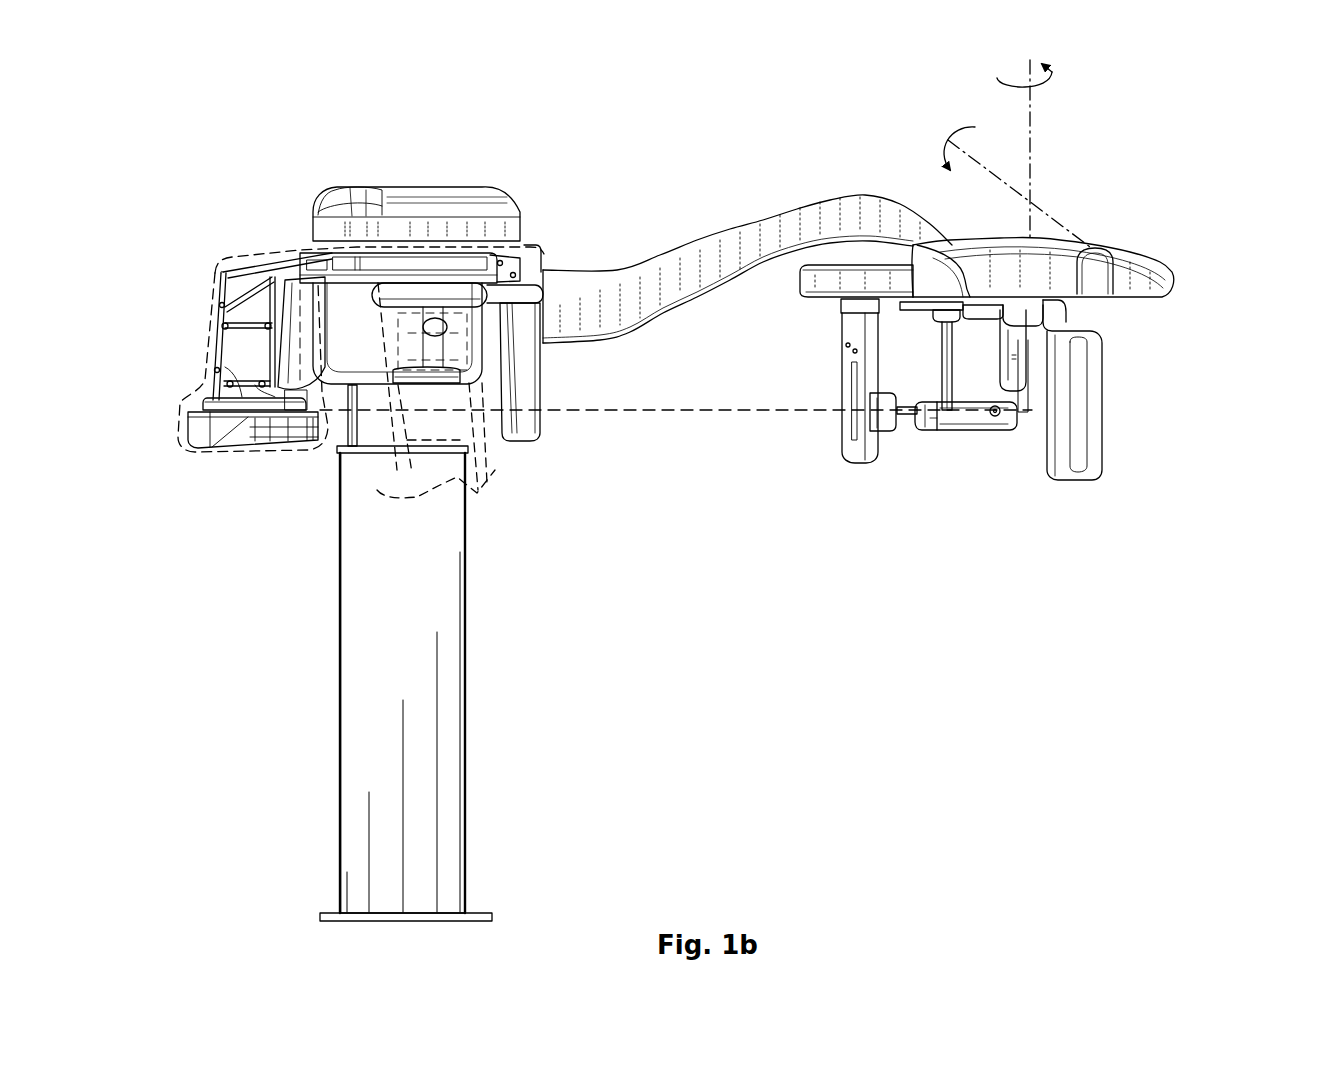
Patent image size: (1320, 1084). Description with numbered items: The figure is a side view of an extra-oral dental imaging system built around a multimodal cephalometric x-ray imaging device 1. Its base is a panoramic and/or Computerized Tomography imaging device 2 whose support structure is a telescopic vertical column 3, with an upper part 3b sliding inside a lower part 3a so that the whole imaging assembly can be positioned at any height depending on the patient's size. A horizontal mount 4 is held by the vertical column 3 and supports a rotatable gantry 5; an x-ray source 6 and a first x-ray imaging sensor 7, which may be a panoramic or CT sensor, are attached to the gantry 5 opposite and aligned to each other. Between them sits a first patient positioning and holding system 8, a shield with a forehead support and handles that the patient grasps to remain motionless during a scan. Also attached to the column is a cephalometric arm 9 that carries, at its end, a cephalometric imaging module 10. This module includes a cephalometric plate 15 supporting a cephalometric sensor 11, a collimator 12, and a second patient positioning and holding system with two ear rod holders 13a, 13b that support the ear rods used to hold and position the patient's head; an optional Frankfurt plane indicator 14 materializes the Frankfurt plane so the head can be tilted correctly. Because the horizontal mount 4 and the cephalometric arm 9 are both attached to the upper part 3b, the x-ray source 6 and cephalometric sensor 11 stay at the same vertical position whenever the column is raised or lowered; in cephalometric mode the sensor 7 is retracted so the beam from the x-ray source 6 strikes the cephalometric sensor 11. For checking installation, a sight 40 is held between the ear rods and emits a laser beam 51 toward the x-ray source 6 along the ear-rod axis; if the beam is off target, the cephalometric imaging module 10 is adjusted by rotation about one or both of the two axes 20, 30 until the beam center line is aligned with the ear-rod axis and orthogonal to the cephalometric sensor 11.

The multimodal cephalometric x-ray imaging device 1 is at (330, 138).
The panoramic and/or Computerized Tomography imaging device 2 is at (250, 235).
The telescopic vertical column 3 is at (362, 653).
The lower part 3a is at (360, 730).
The upper part 3b is at (350, 432).
The horizontal mount 4 is at (406, 228).
The rotatable gantry 5 is at (308, 253).
The x-ray source 6 is at (205, 440).
The first x-ray imaging sensor 7 is at (535, 400).
The first patient positioning and holding system 8 is at (468, 492).
The cephalometric arm 9 is at (722, 258).
The cephalometric imaging module 10 is at (1153, 205).
The cephalometric sensor 11 is at (1085, 385).
The collimator 12 is at (846, 455).
The ear rod holder 13a is at (948, 410).
The ear rod holder 13b is at (1030, 396).
The Frankfurt plane indicator 14 is at (885, 420).
The cephalometric plate 15 is at (1150, 285).
The axis 20 is at (1043, 64).
The axis 30 is at (975, 127).
The sight 40 is at (980, 430).
The laser beam 51 is at (688, 418).